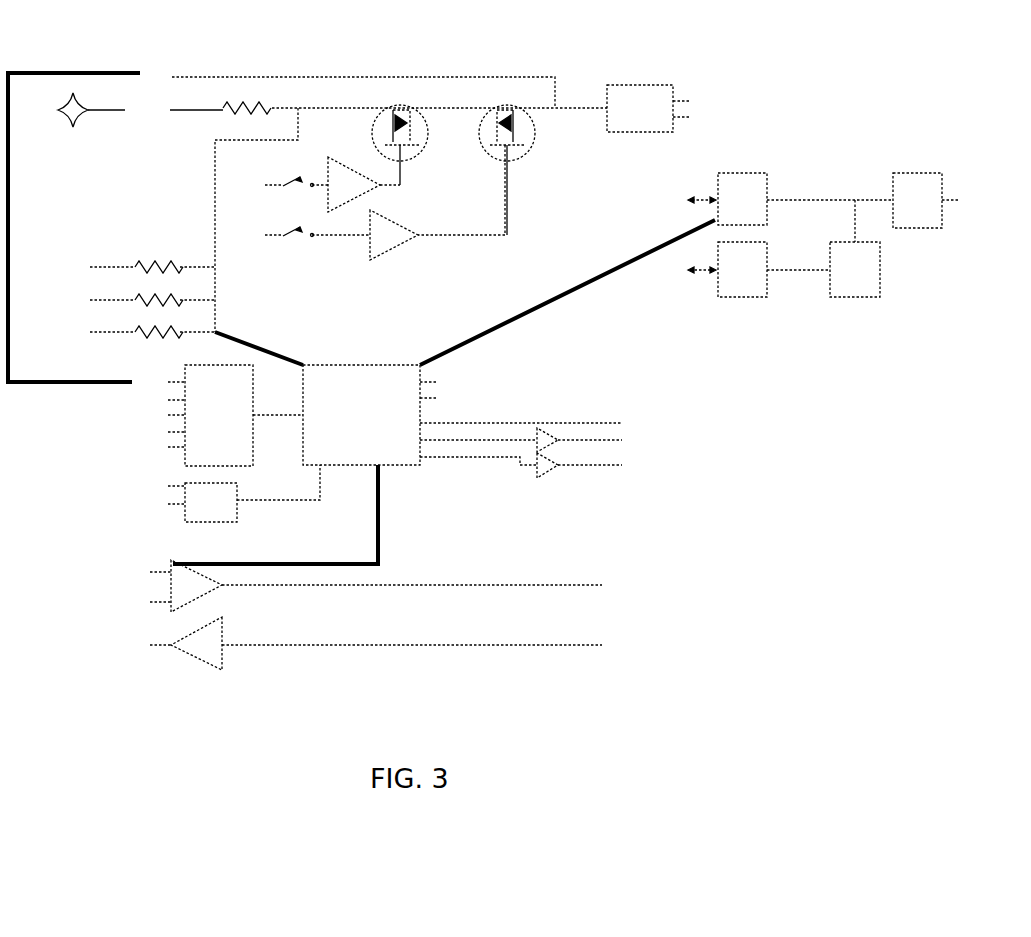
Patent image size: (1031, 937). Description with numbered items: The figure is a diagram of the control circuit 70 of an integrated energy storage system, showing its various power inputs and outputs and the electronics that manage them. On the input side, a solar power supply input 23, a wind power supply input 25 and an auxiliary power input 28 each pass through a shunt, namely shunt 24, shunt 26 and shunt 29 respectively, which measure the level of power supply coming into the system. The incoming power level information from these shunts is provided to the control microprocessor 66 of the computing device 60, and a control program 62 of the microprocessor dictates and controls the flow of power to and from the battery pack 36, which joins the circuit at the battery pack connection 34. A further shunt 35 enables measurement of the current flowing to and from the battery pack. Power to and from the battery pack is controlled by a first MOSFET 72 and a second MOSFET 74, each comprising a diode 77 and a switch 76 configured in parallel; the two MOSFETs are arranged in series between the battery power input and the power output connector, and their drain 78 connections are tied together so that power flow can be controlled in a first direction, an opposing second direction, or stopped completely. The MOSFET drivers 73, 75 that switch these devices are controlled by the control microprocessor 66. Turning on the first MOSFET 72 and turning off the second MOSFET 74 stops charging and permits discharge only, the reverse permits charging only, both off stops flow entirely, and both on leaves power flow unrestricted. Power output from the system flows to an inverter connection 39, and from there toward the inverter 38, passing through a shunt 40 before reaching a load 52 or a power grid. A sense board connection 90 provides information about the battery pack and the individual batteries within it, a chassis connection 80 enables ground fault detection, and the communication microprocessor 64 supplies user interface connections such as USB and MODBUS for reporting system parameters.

The solar power supply input 23 is at (78, 258).
The shunt 24 is at (158, 262).
The wind power supply input 25 is at (50, 318).
The shunt 26 is at (175, 292).
The auxiliary power input 28 is at (90, 333).
The shunt 29 is at (175, 327).
The battery pack connection 34 is at (178, 76).
The shunt 35 is at (122, 418).
The battery pack 36 is at (136, 70).
The inverter 38 is at (140, 118).
The inverter connection 39 is at (174, 116).
The shunt 40 is at (240, 112).
The load 52 is at (66, 126).
The computing device 60 is at (362, 447).
The control program 62 is at (371, 449).
The communication microprocessor 64 is at (825, 163).
The control microprocessor 66 is at (362, 393).
The control circuit 70 is at (735, 432).
The first MOSFET 72 is at (398, 118).
The MOSFET driver 73 is at (350, 196).
The second MOSFET 74 is at (508, 118).
The MOSFET driver 75 is at (392, 240).
The switch 76 is at (522, 160).
The diode 77 is at (522, 140).
The drain 78 is at (440, 108).
The chassis connection 80 is at (135, 487).
The sense board connection 90 is at (340, 550).